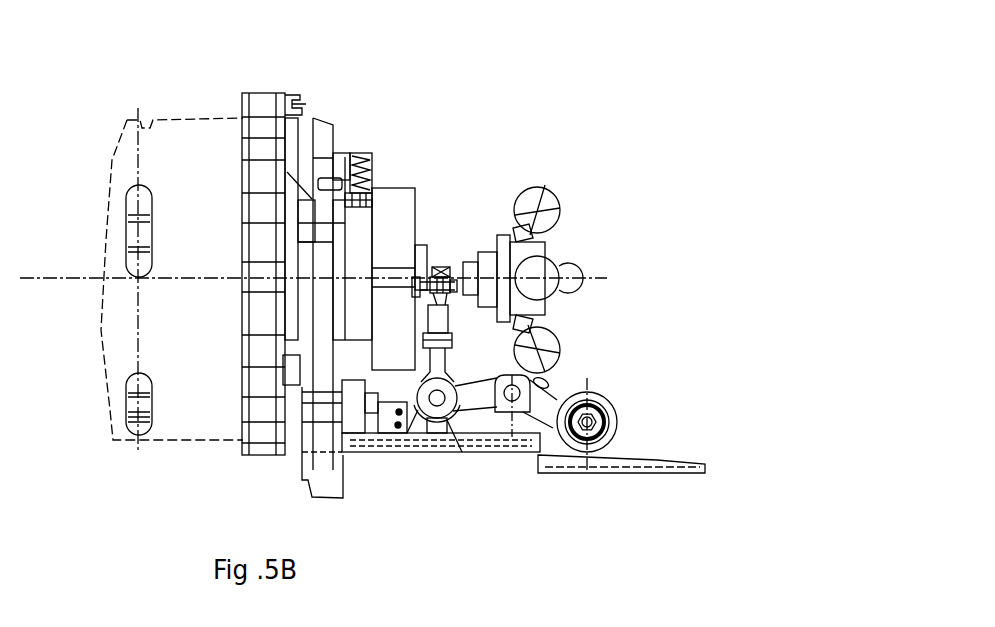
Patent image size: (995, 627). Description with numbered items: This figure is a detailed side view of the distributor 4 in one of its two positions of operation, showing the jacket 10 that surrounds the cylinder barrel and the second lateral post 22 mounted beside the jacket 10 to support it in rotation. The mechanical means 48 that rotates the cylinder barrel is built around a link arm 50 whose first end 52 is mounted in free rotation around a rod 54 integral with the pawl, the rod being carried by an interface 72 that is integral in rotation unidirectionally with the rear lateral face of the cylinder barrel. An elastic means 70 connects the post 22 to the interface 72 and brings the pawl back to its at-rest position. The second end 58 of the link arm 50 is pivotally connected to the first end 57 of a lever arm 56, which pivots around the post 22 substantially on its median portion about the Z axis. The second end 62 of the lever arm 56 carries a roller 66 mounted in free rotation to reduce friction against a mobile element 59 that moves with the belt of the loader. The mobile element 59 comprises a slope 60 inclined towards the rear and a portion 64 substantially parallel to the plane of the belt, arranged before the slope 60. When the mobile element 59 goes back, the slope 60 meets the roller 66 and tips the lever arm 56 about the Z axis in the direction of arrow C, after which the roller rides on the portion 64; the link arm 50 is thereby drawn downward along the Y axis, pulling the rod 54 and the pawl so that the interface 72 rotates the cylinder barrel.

The distributor 4 is at (450, 264).
The jacket 10 is at (192, 420).
The second lateral post 22 is at (258, 105).
The elastic means 70 is at (375, 162).
The interface 72 is at (383, 166).
The Y axis Y is at (437, 480).
The mechanical means 48 is at (591, 331).
The first end of the link arm 52 is at (452, 275).
The rod 54 is at (452, 280).
The link arm 50 is at (441, 327).
The lever arm 56 is at (540, 447).
The first end of the lever arm 57 is at (455, 435).
The second end of the link arm 58 is at (418, 410).
The slope 60 is at (675, 463).
The second end of the lever arm 62 is at (636, 443).
The portion 64 is at (607, 455).
The roller 66 is at (613, 425).
The mobile element 59 is at (774, 457).
The arrow C is at (613, 393).